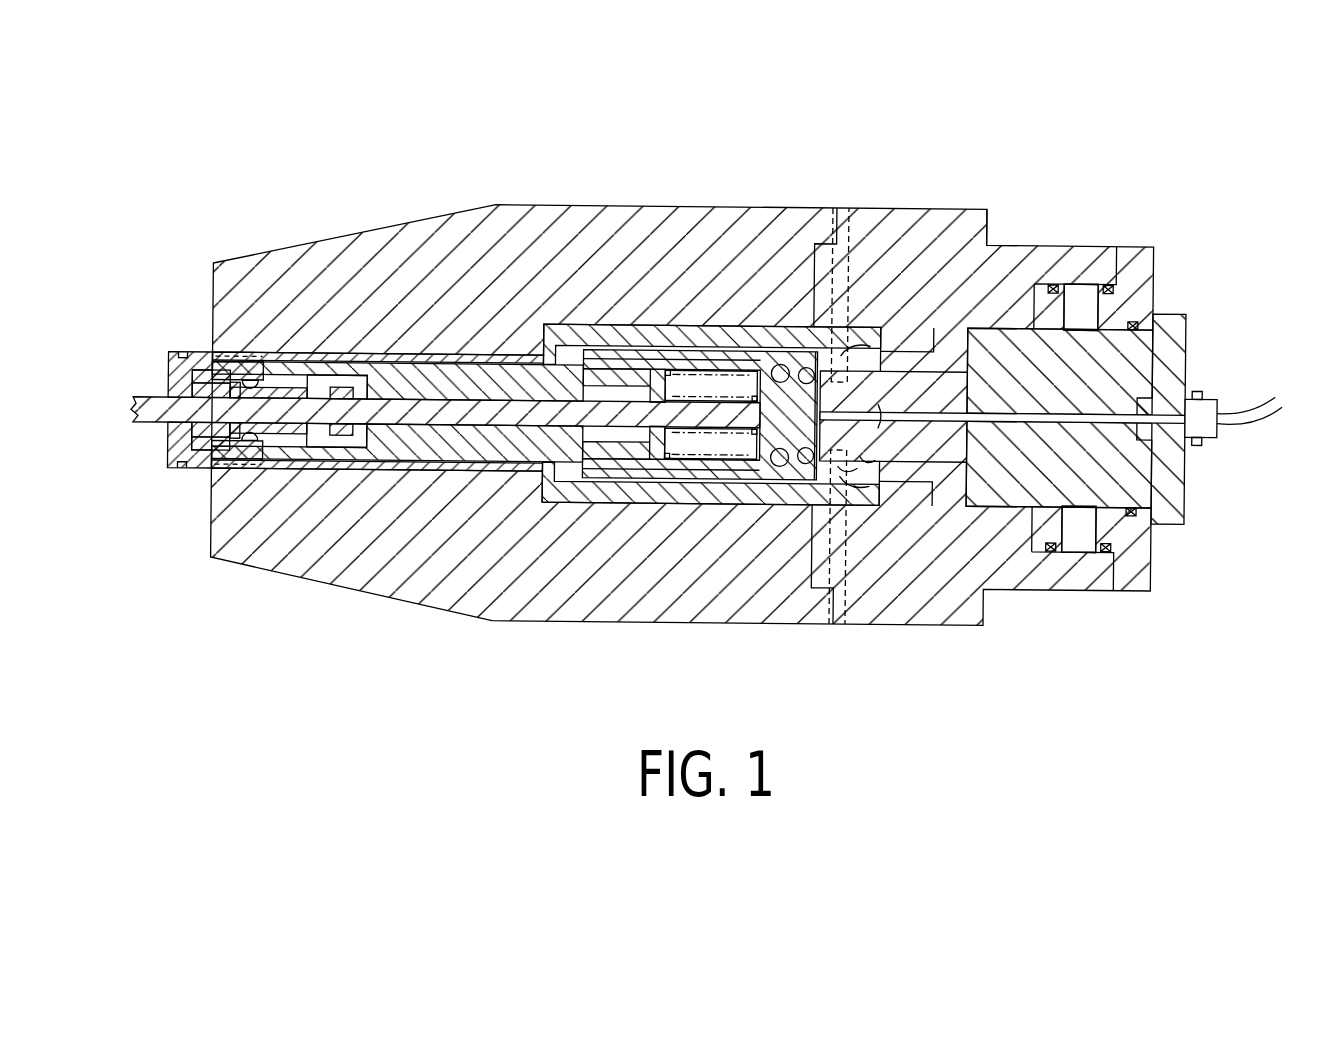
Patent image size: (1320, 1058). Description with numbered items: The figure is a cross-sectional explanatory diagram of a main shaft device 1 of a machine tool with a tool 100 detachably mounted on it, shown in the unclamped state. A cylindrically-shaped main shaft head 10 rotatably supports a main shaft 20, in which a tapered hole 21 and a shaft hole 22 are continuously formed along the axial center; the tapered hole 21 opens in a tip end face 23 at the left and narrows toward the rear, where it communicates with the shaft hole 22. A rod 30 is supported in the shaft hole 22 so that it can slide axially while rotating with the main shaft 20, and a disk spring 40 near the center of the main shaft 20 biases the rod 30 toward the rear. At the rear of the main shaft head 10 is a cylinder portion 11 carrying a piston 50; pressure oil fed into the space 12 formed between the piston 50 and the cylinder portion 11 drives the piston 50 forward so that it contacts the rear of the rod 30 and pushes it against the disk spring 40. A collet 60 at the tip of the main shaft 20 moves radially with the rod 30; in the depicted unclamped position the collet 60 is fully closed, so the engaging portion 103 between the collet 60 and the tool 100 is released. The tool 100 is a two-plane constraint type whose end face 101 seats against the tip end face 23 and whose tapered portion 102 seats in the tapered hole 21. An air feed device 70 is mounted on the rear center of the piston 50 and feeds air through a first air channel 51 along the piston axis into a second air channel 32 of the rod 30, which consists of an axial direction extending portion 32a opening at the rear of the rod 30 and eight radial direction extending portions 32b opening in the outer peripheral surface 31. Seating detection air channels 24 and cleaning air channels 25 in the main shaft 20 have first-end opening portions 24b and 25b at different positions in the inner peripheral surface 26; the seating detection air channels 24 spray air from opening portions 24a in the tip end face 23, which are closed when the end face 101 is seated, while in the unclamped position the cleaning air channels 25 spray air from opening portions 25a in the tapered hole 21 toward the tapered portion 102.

The main shaft device 1 is at (1080, 122).
The main shaft head 10 is at (549, 207).
The cylinder portion 11 is at (1078, 256).
The space 12 is at (1082, 302).
The main shaft 20 is at (655, 326).
The tapered hole 21 is at (223, 352).
The shaft hole 22 is at (463, 402).
The tip end face 23 is at (216, 354).
The seating detection air channel 24 is at (823, 330).
The opening portion 24a is at (194, 360).
The opening portion 24b is at (864, 363).
The cleaning air channel 25 is at (806, 358).
The opening portion 25a is at (247, 380).
The opening portion 25b is at (800, 352).
The inner peripheral surface 26 is at (778, 360).
The rod 30 is at (855, 338).
The outer peripheral surface 31 is at (882, 346).
The second air channel 32 is at (862, 676).
The axial direction extending portion 32a is at (880, 432).
The radial direction extending portion 32b is at (840, 478).
The disk spring 40 is at (708, 375).
The piston 50 is at (1006, 352).
The first air channel 51 is at (1007, 405).
The collet 60 is at (338, 388).
The air feed device 70 is at (1216, 450).
The tool 100 is at (161, 485).
The end face 101 is at (222, 447).
The tapered portion 102 is at (233, 442).
The engaging portion 103 is at (248, 376).